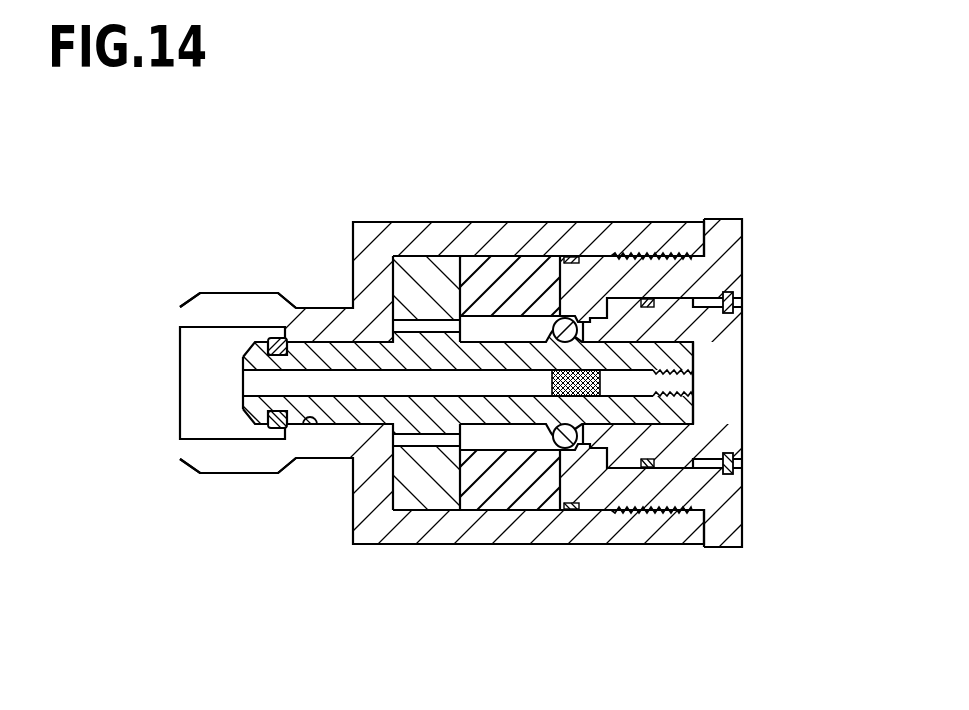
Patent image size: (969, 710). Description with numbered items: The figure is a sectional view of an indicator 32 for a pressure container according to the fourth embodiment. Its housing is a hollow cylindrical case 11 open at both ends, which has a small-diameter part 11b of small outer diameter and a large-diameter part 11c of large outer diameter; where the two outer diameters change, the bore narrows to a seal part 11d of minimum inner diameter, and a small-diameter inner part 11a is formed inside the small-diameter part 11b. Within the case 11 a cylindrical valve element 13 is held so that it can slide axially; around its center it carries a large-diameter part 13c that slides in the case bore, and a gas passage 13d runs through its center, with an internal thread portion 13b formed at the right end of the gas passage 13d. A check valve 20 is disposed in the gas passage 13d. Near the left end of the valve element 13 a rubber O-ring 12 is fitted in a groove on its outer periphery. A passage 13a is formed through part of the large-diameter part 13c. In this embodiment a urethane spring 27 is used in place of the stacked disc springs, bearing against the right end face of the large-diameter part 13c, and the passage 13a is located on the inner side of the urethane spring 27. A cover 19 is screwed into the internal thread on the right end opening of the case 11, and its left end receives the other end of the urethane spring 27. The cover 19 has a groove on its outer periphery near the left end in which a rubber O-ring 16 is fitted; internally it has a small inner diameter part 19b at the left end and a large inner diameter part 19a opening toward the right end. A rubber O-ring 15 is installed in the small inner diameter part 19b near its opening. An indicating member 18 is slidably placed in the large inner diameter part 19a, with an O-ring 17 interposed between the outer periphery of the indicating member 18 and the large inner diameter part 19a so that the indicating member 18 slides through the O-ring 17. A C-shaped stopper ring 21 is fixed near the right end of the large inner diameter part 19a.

The case 11 is at (203, 293).
The small-diameter inner part 11a is at (217, 328).
The small-diameter part 11b is at (243, 297).
The large-diameter part 11c is at (447, 232).
The seal part 11d is at (297, 432).
The O-ring 12 is at (278, 337).
The valve element 13 is at (323, 365).
The passage 13a is at (428, 320).
The internal thread portion 13b is at (697, 381).
The large-diameter part 13c is at (427, 505).
The gas passage 13d is at (245, 383).
The O-ring 15 is at (558, 320).
The O-ring 16 is at (575, 312).
The O-ring 17 is at (648, 300).
The indicating member 18 is at (673, 310).
The cover 19 is at (707, 218).
The large inner diameter part 19a is at (706, 318).
The small inner diameter part 19b is at (605, 307).
The check valve 20 is at (605, 381).
The C-shaped stopper ring 21 is at (733, 300).
The urethane spring 27 is at (497, 273).
The indicator for pressure container 32 is at (782, 212).